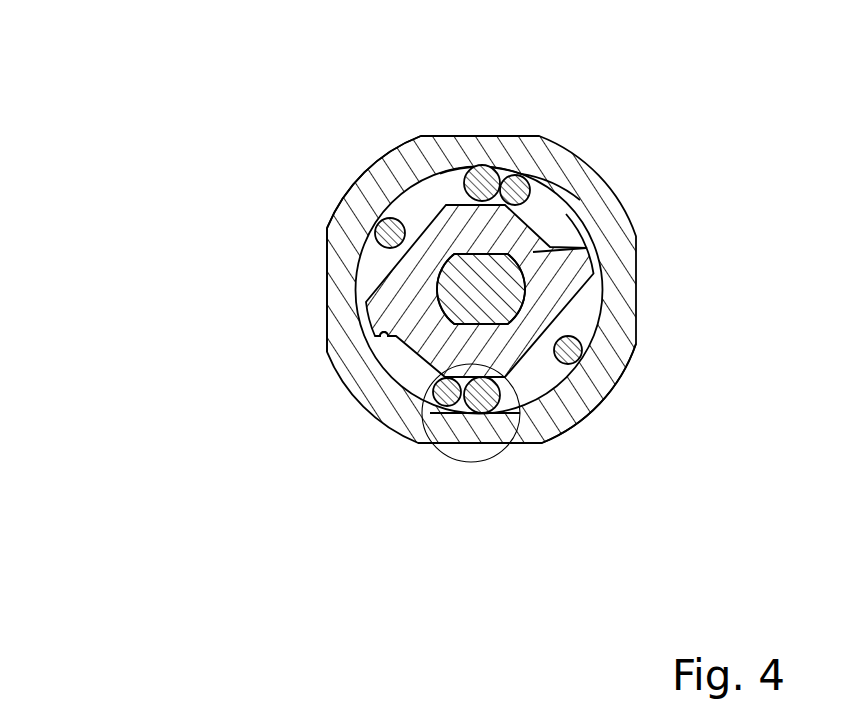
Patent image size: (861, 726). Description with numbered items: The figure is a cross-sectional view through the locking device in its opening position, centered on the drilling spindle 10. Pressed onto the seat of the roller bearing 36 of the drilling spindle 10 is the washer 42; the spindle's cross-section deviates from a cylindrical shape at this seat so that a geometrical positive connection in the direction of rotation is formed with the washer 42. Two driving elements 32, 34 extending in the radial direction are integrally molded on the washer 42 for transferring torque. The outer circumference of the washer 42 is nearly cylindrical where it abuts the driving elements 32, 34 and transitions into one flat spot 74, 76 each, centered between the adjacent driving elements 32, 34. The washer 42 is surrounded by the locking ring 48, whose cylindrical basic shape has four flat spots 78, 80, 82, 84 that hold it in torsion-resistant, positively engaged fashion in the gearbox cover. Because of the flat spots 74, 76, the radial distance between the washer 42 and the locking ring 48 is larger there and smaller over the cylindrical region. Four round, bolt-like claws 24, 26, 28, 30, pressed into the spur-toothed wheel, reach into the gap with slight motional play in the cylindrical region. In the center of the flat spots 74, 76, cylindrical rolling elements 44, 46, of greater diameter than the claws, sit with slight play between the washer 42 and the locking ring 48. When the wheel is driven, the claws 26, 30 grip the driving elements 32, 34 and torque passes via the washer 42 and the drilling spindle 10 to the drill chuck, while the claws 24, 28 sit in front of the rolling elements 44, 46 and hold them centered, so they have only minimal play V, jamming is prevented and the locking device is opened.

The drilling spindle 10 is at (508, 288).
The claw 24 is at (535, 181).
The claw 26 is at (581, 359).
The claw 28 is at (436, 403).
The claw 30 is at (378, 221).
The driving element 32 is at (372, 288).
The driving element 34 is at (636, 356).
The seat of the roller bearing 36 is at (428, 305).
The washer 42 is at (560, 251).
The cylindrical rolling element 44 is at (497, 172).
The cylindrical rolling element 46 is at (483, 414).
The locking ring 48 is at (470, 148).
The flat spot 74 is at (410, 137).
The flat spot 76 is at (524, 417).
The flat spot 78 is at (446, 103).
The flat spot 80 is at (637, 317).
The flat spot 82 is at (457, 447).
The flat spot 84 is at (327, 258).
The valve gap V is at (422, 410).